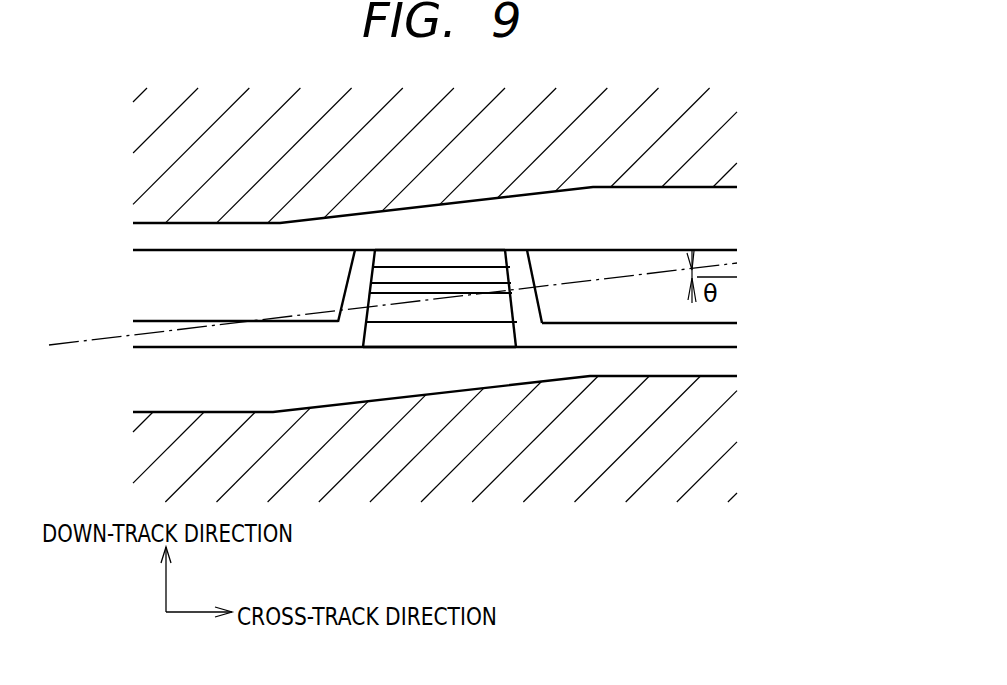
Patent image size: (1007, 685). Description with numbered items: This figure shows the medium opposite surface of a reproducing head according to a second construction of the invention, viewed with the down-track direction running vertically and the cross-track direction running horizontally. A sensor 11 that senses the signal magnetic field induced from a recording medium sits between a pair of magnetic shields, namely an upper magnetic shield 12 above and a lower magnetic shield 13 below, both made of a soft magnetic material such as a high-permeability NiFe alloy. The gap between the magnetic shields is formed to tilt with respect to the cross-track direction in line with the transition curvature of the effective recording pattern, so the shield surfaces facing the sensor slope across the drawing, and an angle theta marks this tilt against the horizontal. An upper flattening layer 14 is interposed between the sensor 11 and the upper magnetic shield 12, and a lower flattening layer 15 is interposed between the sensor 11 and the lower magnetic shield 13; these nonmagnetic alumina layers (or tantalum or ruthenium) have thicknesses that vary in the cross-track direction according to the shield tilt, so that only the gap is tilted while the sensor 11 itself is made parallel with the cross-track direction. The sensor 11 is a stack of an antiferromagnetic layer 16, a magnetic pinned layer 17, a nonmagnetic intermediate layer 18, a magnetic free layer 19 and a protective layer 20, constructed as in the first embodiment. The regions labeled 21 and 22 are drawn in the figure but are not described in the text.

The sensor 11 is at (347, 253).
The upper magnetic shield 12 is at (703, 131).
The lower magnetic shield 13 is at (702, 453).
The upper flattening layer 14 is at (703, 218).
The lower flattening layer 15 is at (702, 363).
The antiferromagnetic layer 16 is at (493, 337).
The magnetic pinned layer 17 is at (497, 310).
The nonmagnetic intermediate layer 18 is at (477, 287).
The magnetic free layer 19 is at (453, 277).
The protective layer 20 is at (430, 257).
The upper track 21 is at (160, 268).
The skew center line 22 is at (150, 328).